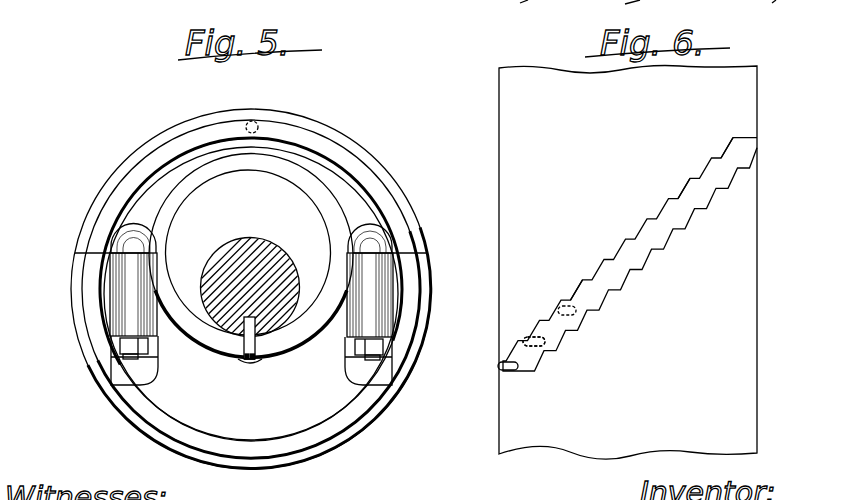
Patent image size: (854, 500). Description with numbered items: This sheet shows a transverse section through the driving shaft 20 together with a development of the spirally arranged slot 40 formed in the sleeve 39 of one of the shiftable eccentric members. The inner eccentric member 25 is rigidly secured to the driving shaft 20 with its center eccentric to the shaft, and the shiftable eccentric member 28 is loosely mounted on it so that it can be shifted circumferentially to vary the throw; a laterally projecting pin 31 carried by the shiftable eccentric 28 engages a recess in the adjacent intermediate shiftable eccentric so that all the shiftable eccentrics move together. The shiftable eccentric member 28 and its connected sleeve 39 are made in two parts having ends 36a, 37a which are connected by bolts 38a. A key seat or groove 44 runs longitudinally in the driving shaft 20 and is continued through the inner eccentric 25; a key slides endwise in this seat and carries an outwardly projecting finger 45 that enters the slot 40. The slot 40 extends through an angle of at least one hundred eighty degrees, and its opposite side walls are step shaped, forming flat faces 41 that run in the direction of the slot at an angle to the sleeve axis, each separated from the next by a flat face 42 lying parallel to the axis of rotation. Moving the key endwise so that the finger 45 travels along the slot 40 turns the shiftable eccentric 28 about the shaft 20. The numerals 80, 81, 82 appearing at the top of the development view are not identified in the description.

In FIG. 5, the driving shaft 20 is at (250, 238).
In FIG. 5, the inner eccentric member 25 is at (283, 193).
In FIG. 5, the shiftable eccentric member 28 is at (268, 458).
In FIG. 5, the laterally projecting pin 31 is at (258, 121).
In FIG. 5, the end 36a is at (443, 277).
In FIG. 5, the end 37a is at (410, 230).
In FIG. 5, the bolts 38a is at (410, 385).
In FIG. 5, the sleeve 39 is at (335, 208).
In FIG. 6, the sleeve 39 is at (508, 139).
In FIG. 5, the spirally arranged slot 40 is at (258, 363).
In FIG. 6, the spirally arranged slot 40 is at (590, 295).
In FIG. 5, the flat faces 41 is at (298, 286).
In FIG. 6, the flat faces 41 is at (602, 267).
In FIG. 5, the flat faces 42 is at (246, 361).
In FIG. 6, the flat faces 42 is at (610, 258).
In FIG. 5, the key seat 44 is at (250, 361).
In FIG. 6, the finger 45 is at (540, 352).
In FIG. 6, the upper element 80 is at (527, 13).
In FIG. 6, the upper element 81 is at (630, 0).
In FIG. 6, the upper element 82 is at (774, 0).